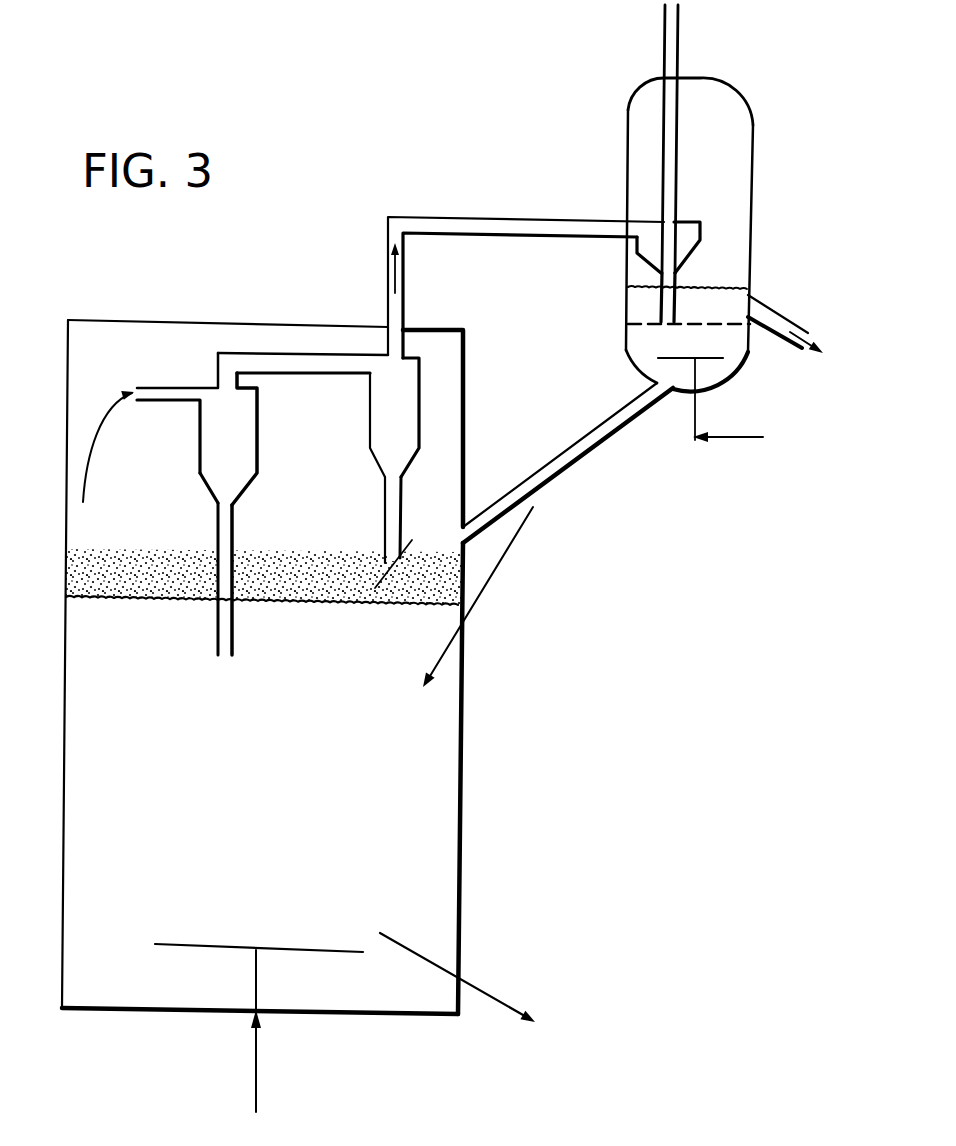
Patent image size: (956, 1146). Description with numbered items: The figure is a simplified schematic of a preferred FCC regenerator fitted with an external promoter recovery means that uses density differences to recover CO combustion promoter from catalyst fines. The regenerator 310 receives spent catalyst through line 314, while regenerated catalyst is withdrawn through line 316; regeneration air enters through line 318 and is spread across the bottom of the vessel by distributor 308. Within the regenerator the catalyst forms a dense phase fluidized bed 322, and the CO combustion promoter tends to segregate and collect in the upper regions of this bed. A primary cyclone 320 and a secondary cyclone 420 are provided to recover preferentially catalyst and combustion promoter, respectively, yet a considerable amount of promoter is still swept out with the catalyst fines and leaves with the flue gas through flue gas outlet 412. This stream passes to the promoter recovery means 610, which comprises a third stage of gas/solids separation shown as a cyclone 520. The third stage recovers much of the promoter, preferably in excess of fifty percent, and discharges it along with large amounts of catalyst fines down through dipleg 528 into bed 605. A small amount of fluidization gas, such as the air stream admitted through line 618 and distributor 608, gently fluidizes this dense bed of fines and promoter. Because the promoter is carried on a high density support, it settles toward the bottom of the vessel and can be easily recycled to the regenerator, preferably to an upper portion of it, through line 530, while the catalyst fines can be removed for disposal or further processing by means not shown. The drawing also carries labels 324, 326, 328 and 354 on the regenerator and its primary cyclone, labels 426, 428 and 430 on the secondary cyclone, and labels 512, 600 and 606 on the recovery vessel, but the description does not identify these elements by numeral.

The distributor 308 is at (302, 952).
The regenerator 310 is at (62, 723).
The line 314 is at (503, 557).
The line 316 is at (478, 988).
The line 318 is at (257, 1052).
The primary cyclone 320 is at (258, 432).
The dense phase fluidized bed 322 is at (60, 905).
The fluidized bed 324 is at (93, 597).
The cyclone gas outlet 326 is at (192, 384).
The cyclone dipleg 328 is at (236, 556).
The bed surface 354 is at (92, 550).
The flue gas outlet 412 is at (405, 306).
The secondary cyclone 420 is at (422, 405).
The connecting duct 426 is at (358, 356).
The second cyclone dipleg 428 is at (400, 511).
The dipleg outlet 430 is at (378, 585).
The feed conduit 512 is at (679, 37).
The cyclone 520 is at (705, 238).
The dipleg 528 is at (660, 297).
The line 530 is at (600, 446).
The lower chamber 600 is at (640, 348).
The bed 605 is at (735, 316).
The gas outlet 606 is at (765, 305).
The distributor 608 is at (718, 360).
The promoter recovery means 610 is at (755, 119).
The line 618 is at (728, 438).